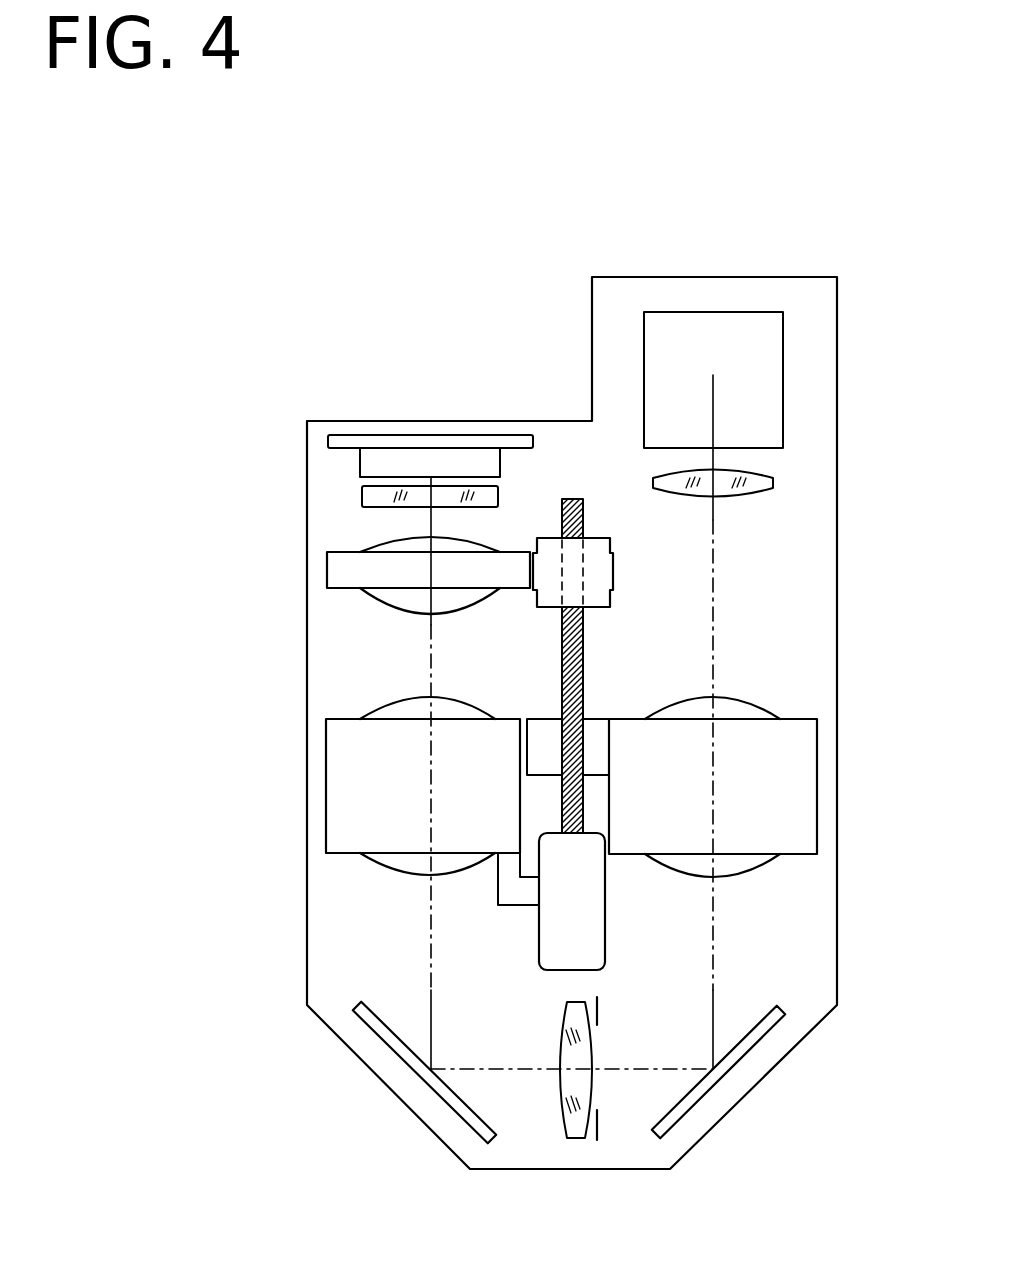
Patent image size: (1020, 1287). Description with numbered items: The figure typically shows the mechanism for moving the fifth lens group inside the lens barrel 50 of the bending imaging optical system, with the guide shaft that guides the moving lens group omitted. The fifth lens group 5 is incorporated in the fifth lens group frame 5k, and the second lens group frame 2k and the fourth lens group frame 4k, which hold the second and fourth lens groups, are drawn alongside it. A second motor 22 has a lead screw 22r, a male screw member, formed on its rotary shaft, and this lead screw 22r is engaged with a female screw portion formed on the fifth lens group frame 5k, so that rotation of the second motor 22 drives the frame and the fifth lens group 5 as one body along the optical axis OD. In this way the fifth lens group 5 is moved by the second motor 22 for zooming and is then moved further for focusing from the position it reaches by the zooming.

The lens barrel 50 is at (388, 297).
The fifth lens group 5 is at (396, 593).
The fifth lens group frame 5k is at (545, 603).
The lead screw 22r is at (586, 657).
The fourth lens group frame 4k is at (368, 786).
The second lens group frame 2k is at (762, 785).
The second motor 22 is at (590, 943).
The optical axis OD is at (429, 954).